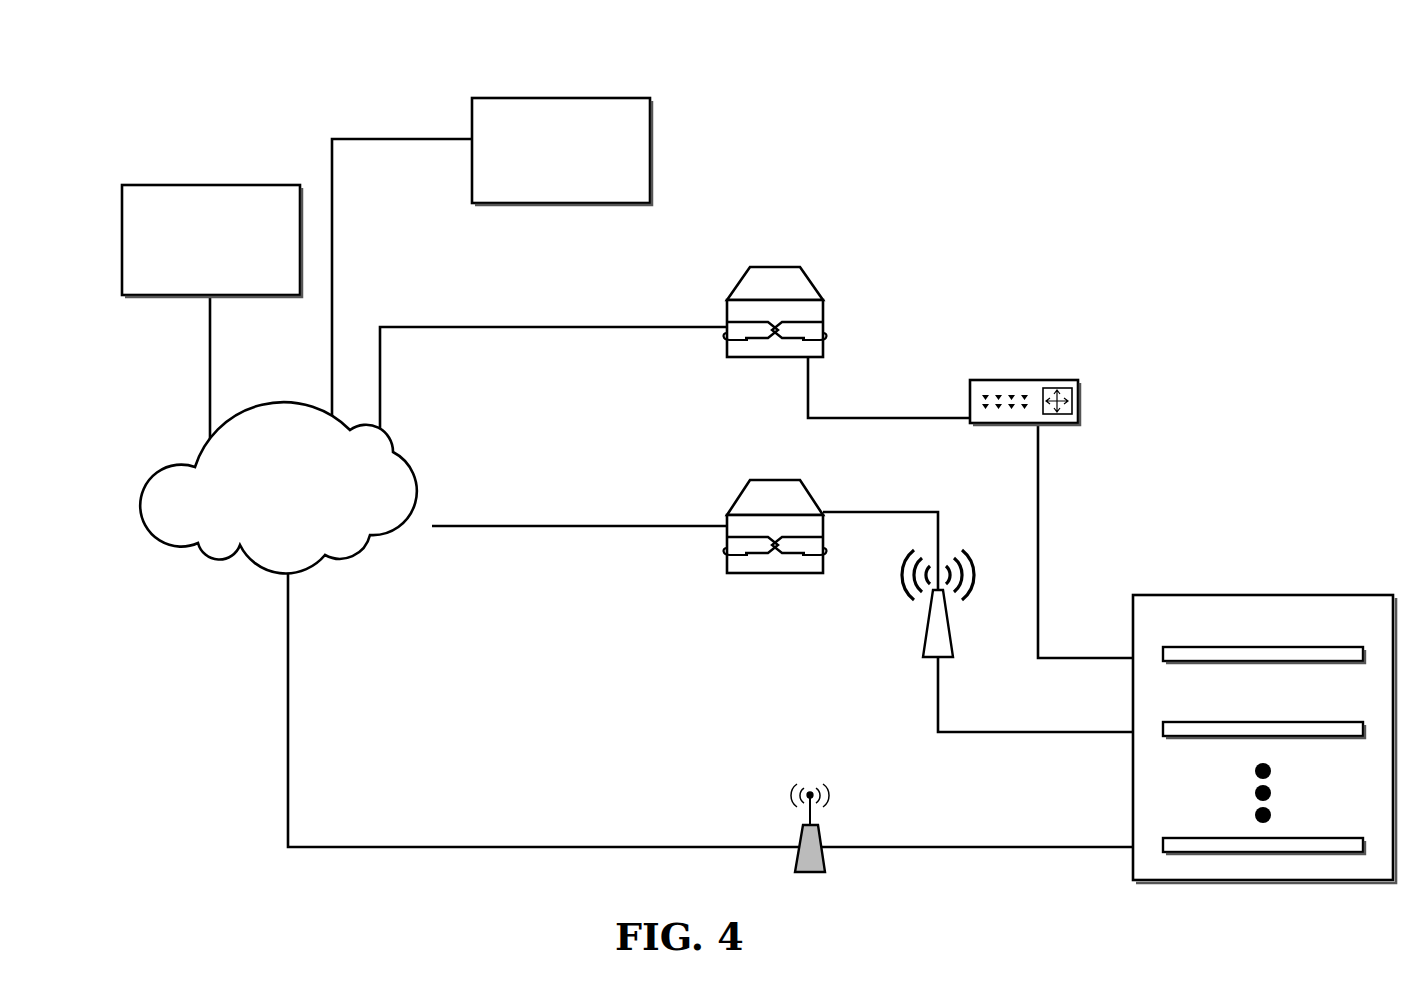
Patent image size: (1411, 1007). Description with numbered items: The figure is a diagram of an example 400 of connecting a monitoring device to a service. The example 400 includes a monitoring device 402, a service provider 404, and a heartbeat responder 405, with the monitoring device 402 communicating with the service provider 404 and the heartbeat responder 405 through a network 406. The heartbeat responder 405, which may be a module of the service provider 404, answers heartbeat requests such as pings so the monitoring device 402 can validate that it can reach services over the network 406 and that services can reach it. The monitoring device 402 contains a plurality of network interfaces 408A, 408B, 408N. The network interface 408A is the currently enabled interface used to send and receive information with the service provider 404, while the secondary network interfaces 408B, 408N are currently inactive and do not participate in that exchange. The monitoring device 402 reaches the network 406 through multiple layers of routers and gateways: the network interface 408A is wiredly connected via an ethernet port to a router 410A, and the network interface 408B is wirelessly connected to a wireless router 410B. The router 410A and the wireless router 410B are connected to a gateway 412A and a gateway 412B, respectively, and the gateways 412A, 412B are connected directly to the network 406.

The example 400 is at (158, 124).
The monitoring device 402 is at (1235, 595).
The service provider 404 is at (578, 98).
The heartbeat responder 405 is at (193, 185).
The network 406 is at (278, 487).
The network interface 408A is at (1310, 646).
The network interface 408B is at (1298, 721).
The network interface 408N is at (1310, 838).
The router 410A is at (1030, 380).
The wireless router 410B is at (923, 655).
The gateway 412A is at (763, 267).
The gateway 412B is at (778, 480).